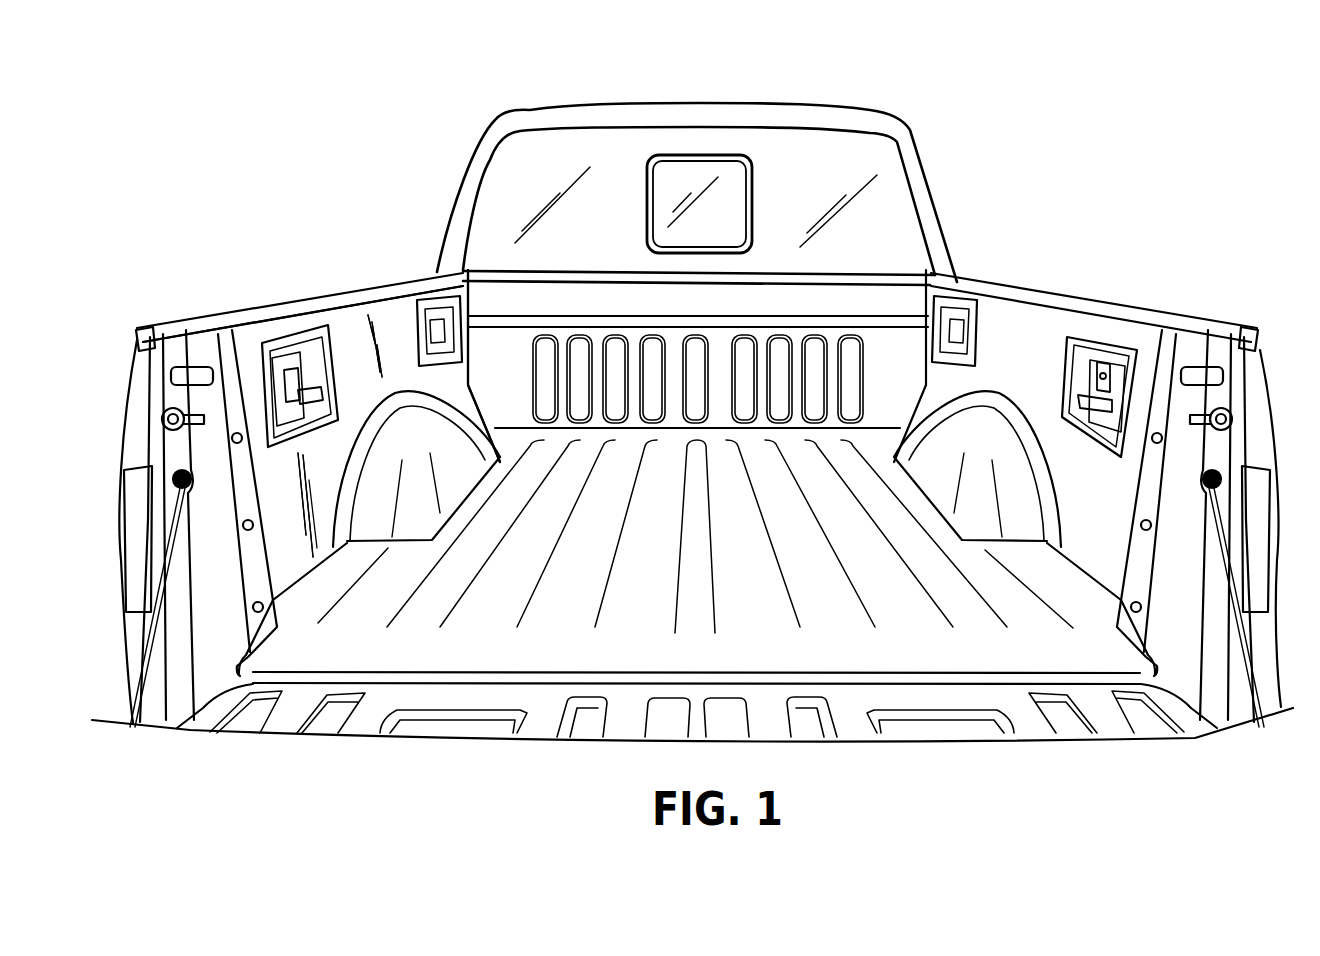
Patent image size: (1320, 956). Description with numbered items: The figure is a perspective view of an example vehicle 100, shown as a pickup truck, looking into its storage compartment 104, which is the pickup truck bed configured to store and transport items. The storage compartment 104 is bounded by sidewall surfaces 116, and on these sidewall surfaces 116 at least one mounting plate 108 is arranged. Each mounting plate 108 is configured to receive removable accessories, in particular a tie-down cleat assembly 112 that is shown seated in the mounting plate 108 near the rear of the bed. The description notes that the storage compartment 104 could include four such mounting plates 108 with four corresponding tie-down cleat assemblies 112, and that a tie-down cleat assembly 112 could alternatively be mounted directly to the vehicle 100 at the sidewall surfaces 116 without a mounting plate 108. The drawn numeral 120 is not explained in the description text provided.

The vehicle 100 is at (308, 138).
The storage compartment 104 is at (1020, 215).
The mounting plate 108 is at (1087, 358).
The tie-down cleat assembly 112 is at (1080, 393).
The sidewall surfaces 116 is at (343, 361).
The tie-down anchor 120 is at (290, 341).